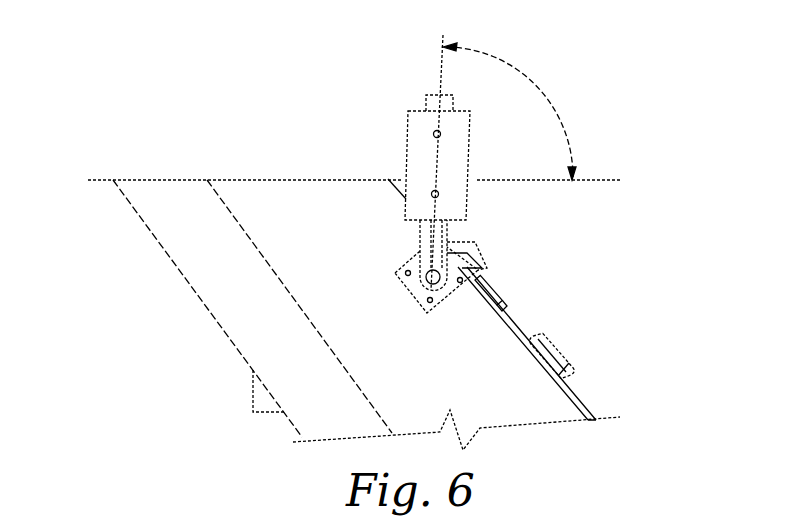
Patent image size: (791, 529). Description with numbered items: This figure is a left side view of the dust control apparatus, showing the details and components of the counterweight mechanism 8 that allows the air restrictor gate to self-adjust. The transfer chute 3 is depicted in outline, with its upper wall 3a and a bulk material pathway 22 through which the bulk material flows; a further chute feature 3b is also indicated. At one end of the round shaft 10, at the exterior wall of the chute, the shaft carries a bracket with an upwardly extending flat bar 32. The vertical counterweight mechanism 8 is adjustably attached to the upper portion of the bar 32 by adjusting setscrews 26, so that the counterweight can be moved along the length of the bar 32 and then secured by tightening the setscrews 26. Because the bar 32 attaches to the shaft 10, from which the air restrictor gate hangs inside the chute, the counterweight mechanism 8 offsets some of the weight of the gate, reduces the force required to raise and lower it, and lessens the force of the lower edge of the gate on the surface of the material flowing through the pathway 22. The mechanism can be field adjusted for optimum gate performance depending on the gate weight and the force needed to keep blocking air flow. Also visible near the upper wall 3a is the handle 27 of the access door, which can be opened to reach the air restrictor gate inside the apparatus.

The transfer chute 3 is at (295, 197).
The upper wall 3a is at (580, 403).
The panel notch 3b is at (214, 317).
The counterweight mechanism 8 is at (380, 120).
The round shaft 10 is at (402, 285).
The bulk material pathway 22 is at (182, 222).
The adjusting setscrews 26 is at (490, 157).
The handle 27 is at (565, 340).
The flat bar 32 is at (437, 93).